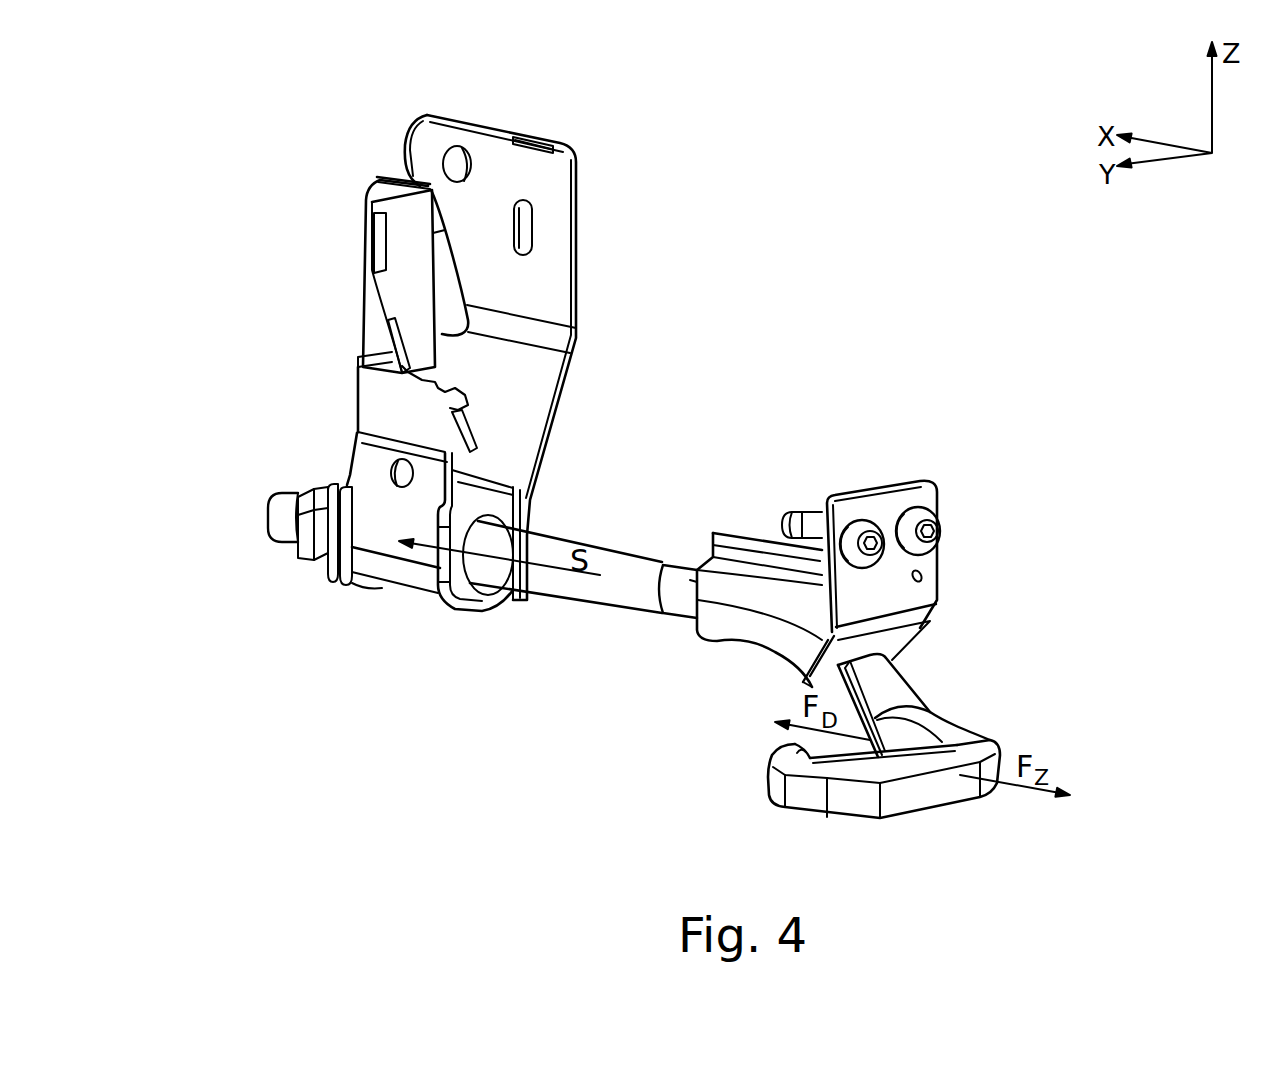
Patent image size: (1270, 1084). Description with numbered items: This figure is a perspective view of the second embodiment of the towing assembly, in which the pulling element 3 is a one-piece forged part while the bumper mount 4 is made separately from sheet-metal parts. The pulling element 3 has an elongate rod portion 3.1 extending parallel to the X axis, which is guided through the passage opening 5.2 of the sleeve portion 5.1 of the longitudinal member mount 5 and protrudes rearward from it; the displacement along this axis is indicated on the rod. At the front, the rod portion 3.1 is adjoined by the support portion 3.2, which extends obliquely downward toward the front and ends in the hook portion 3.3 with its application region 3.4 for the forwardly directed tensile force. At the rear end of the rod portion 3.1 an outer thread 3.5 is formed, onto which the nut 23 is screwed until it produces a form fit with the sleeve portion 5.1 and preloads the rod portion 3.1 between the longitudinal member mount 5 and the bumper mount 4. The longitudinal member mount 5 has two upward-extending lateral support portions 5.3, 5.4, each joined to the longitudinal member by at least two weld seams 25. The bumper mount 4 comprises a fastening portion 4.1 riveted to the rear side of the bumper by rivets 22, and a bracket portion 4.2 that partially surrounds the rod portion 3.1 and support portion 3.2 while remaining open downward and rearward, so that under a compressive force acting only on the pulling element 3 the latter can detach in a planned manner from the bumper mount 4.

The pulling element 3 is at (653, 603).
The rod portion 3.1 is at (572, 533).
The support portion 3.2 is at (926, 677).
The hook portion 3.3 is at (954, 790).
The application region 3.4 is at (888, 745).
The outer thread 3.5 is at (258, 497).
The bumper mount 4 is at (727, 553).
The fastening portion 4.1 is at (952, 582).
The bracket portion 4.2 is at (757, 655).
The longitudinal member mount 5 is at (405, 573).
The sleeve portion 5.1 is at (433, 605).
The passage opening 5.2 is at (480, 598).
The lateral support portion 5.3 is at (335, 262).
The lateral support portion 5.4 is at (590, 268).
The rivets 22 is at (847, 520).
The nut 23 is at (313, 533).
The weld seams 25 is at (383, 183).